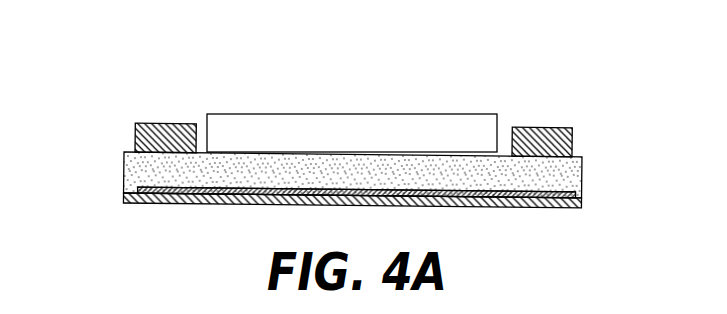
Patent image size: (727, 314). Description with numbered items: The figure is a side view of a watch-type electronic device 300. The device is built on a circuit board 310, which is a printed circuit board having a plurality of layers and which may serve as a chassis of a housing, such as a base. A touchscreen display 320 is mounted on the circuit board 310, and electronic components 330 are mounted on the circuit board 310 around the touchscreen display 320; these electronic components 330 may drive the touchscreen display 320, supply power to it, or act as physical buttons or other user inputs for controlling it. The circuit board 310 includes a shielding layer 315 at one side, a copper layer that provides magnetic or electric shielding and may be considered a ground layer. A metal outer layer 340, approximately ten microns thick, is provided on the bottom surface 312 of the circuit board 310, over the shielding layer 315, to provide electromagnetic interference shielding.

The watch-type electronic device 300 is at (127, 45).
The circuit board 310 is at (577, 164).
The bottom surface 312 is at (581, 184).
The shielding layer 315 is at (142, 186).
The touchscreen display 320 is at (452, 113).
The electronic components 330 is at (170, 123).
The metal outer layer 340 is at (158, 203).